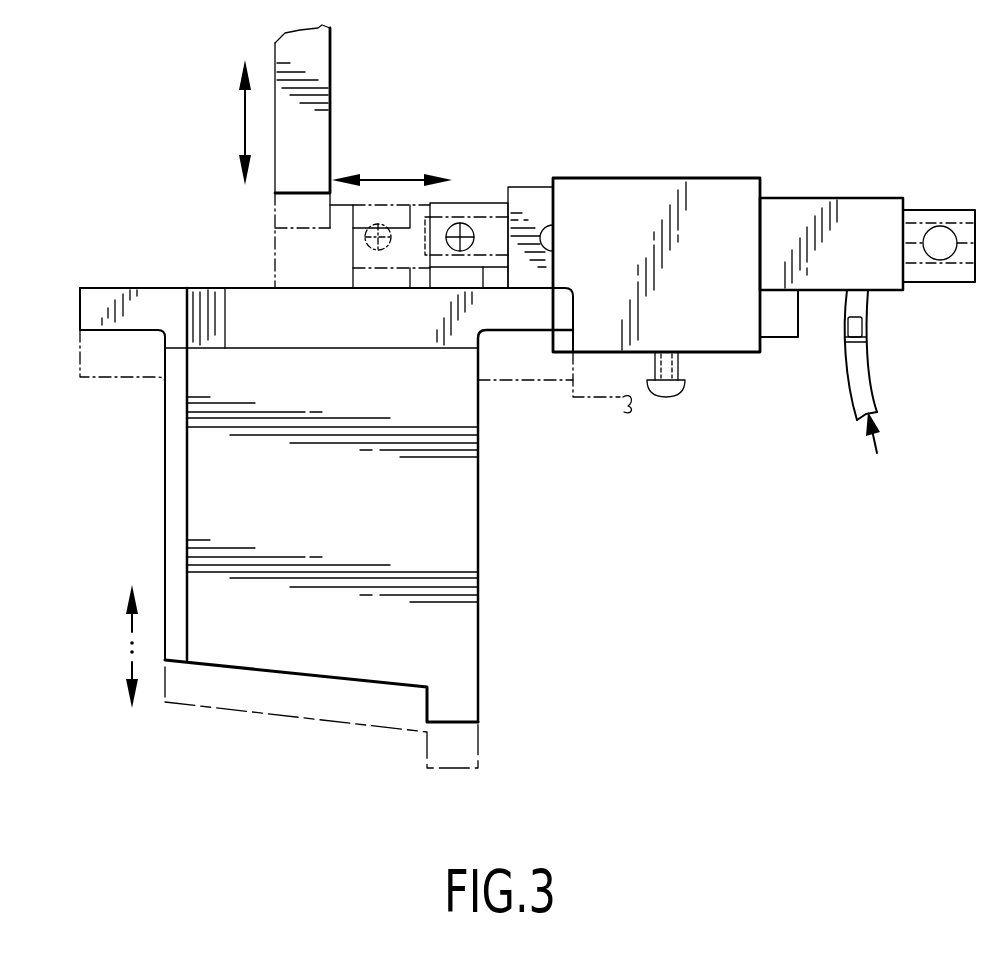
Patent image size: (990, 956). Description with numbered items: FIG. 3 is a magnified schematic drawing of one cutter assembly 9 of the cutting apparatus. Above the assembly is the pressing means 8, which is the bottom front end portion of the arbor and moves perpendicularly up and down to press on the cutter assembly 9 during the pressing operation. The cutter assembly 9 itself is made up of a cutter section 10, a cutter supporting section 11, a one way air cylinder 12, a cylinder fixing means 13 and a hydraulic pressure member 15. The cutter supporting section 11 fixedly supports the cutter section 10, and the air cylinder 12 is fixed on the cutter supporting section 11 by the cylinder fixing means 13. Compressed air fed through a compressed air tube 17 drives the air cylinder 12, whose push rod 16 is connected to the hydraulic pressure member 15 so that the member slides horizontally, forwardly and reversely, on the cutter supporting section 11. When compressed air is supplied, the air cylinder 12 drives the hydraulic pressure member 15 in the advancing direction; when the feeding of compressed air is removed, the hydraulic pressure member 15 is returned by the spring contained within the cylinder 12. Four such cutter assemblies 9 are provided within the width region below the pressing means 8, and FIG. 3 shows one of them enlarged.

The pressing means 8 is at (322, 50).
The cutter assembly 9 is at (86, 176).
The cutter section 10 is at (458, 530).
The cutter supporting section 11 is at (513, 322).
The one way air cylinder 12 is at (840, 203).
The cylinder fixing means 13 is at (692, 195).
The hydraulic pressure member 15 is at (420, 212).
The push rod 16 is at (480, 210).
The compressed air tube 17 is at (857, 357).